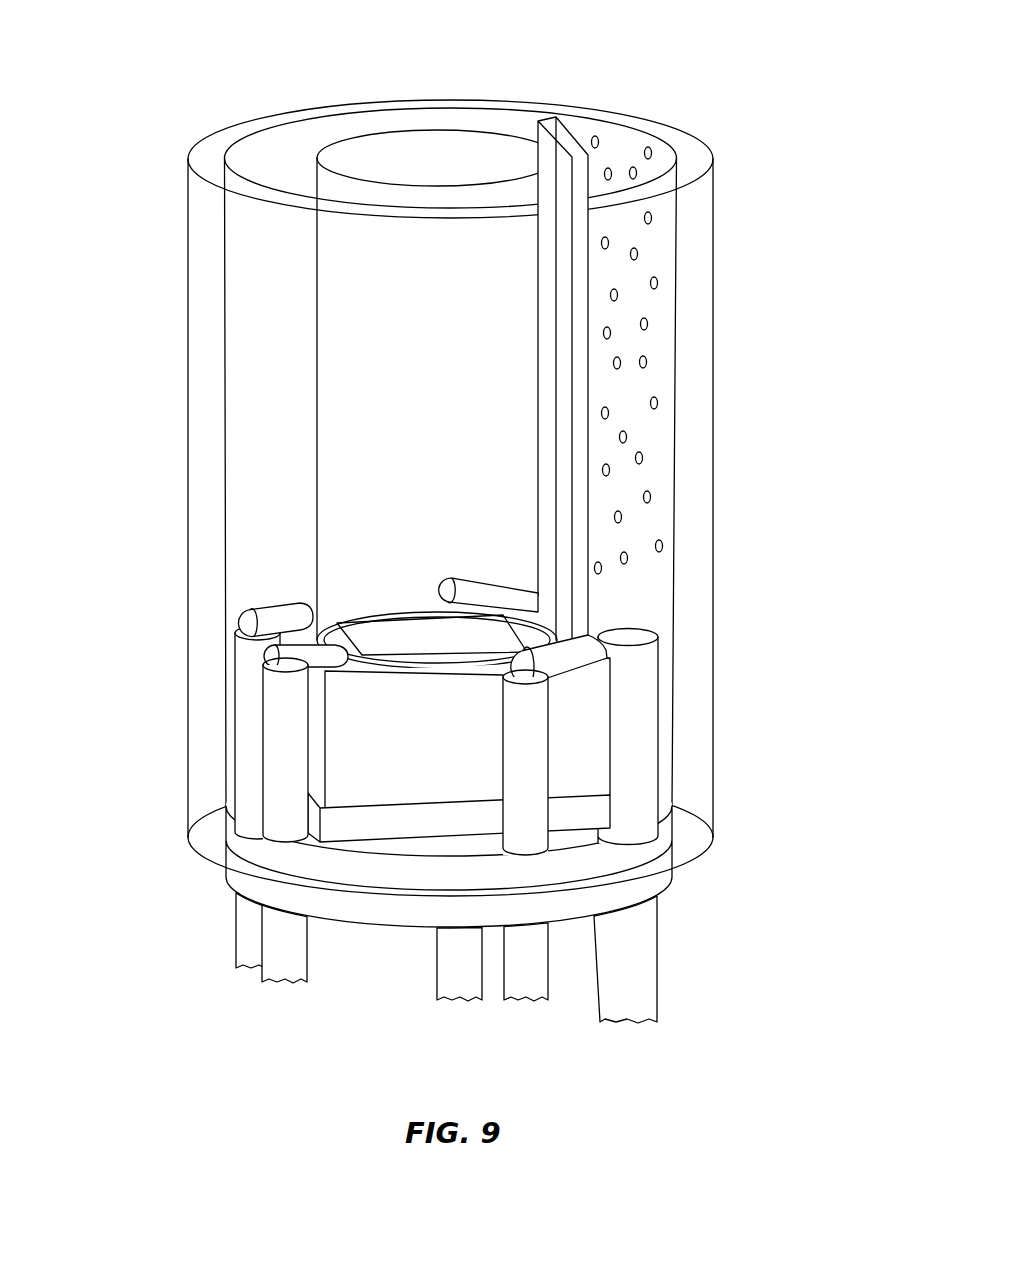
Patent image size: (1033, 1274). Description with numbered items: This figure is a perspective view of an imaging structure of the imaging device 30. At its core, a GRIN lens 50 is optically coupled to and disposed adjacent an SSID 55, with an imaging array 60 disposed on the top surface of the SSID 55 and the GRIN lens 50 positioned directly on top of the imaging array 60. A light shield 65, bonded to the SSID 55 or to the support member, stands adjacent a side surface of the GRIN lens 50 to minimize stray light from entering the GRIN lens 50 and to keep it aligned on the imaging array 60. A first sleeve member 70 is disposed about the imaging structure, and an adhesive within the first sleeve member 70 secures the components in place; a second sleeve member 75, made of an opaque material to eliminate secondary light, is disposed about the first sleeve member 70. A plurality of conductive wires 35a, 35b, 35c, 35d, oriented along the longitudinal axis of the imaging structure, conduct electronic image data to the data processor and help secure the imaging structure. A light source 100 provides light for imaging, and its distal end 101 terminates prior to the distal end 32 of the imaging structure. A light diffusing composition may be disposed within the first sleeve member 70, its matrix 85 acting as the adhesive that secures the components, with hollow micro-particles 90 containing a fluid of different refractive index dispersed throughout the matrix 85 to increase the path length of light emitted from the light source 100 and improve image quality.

The imaging device 30 is at (461, 543).
The distal end of the imaging structure 32 is at (740, 173).
The conductive wire 35a is at (538, 970).
The conductive wire 35b is at (435, 977).
The conductive wire 35c is at (297, 945).
The conductive wire 35d is at (243, 935).
The GRIN lens 50 is at (465, 129).
The SSID 55 is at (352, 722).
The imaging array 60 is at (366, 633).
The light shield 65 is at (568, 135).
The first sleeve member 70 is at (250, 136).
The second sleeve member 75 is at (301, 111).
The matrix 85 is at (677, 307).
The hollow micro-particles 90 is at (661, 149).
The light source 100 is at (697, 825).
The distal end of the light source 101 is at (650, 650).